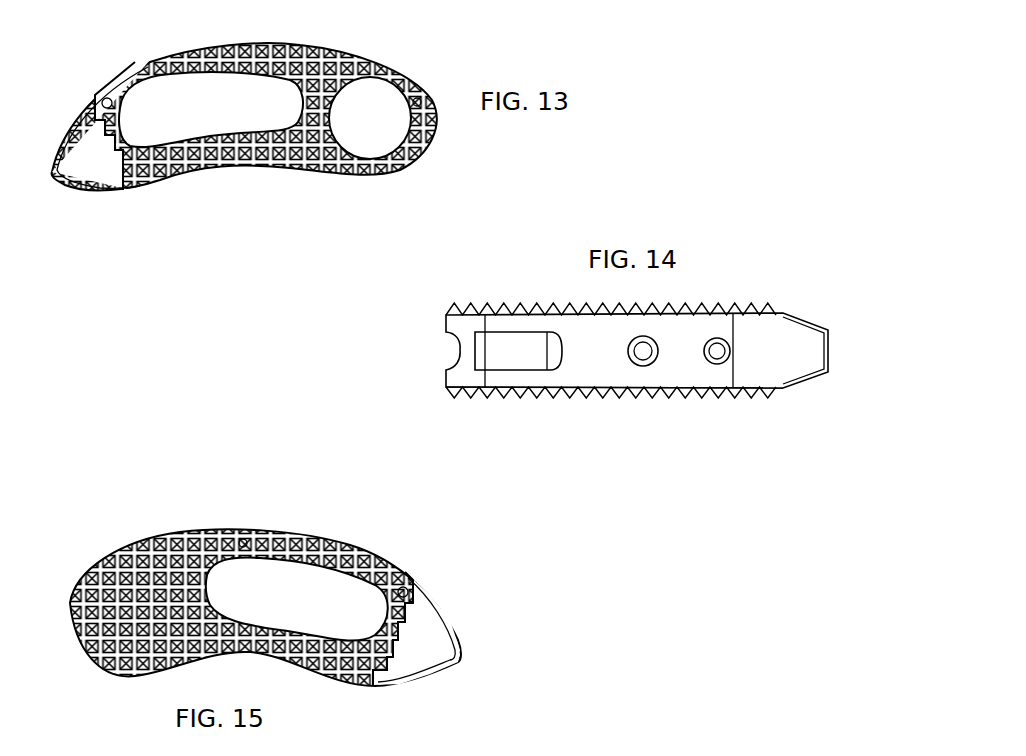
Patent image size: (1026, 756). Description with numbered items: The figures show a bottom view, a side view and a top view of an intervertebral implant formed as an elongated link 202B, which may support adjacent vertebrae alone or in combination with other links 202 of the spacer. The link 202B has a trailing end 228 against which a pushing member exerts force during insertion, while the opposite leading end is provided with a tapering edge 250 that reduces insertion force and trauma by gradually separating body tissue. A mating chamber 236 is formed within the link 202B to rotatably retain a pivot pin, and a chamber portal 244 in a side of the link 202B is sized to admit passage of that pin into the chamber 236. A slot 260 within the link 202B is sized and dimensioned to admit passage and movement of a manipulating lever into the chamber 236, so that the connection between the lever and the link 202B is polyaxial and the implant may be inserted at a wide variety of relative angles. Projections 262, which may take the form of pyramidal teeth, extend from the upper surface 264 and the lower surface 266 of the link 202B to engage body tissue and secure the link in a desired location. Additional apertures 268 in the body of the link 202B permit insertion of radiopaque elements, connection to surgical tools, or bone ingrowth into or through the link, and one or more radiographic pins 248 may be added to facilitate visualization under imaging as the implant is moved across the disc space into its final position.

In FIG. 15, the link 202 is at (821, 746).
In FIG. 13, the link 202B is at (485, 288).
In FIG. 15, the link 202B is at (365, 540).
In FIG. 13, the trailing end 228 is at (226, 112).
In FIG. 15, the trailing end 228 is at (252, 597).
In FIG. 13, the chamber 236 is at (391, 119).
In FIG. 13, the chamber portal 244 is at (362, 137).
In FIG. 15, the radiographic pin 248 is at (257, 542).
In FIG. 13, the tapering edge 250 is at (72, 200).
In FIG. 14, the tapering edge 250 is at (637, 346).
In FIG. 15, the tapering edge 250 is at (427, 653).
In FIG. 14, the slot 260 is at (455, 350).
In FIG. 14, the projections 262 is at (618, 403).
In FIG. 14, the upper surface 264 is at (639, 417).
In FIG. 14, the lower surface 266 is at (731, 288).
In FIG. 14, the apertures 268 is at (643, 351).